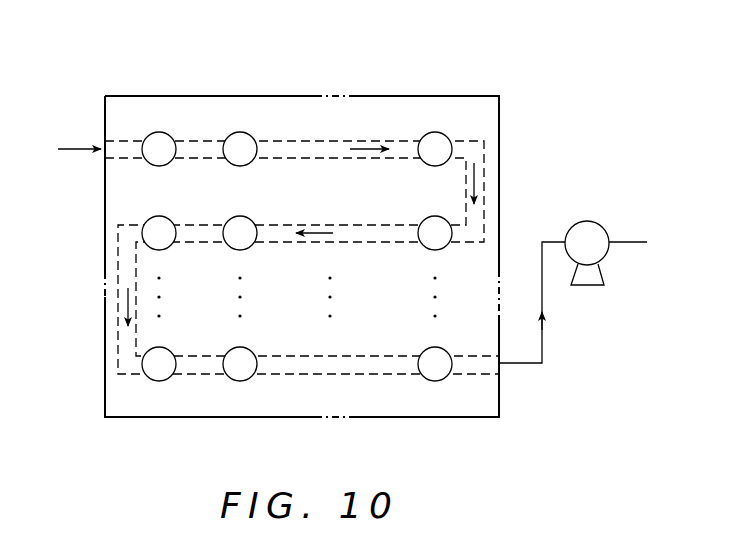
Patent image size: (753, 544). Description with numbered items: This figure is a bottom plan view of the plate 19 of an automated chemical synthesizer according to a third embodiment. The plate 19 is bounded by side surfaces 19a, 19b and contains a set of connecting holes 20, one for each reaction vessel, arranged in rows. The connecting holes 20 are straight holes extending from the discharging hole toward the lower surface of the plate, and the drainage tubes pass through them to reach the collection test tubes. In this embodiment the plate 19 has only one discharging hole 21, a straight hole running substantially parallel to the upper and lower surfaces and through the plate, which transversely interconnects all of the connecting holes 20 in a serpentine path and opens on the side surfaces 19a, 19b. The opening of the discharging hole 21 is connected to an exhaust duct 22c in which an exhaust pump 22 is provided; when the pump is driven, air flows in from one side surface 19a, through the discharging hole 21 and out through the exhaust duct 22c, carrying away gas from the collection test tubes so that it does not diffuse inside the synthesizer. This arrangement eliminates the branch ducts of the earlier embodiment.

The plate 19 is at (457, 95).
The side surface 19a is at (105, 382).
The side surface 19b is at (499, 398).
The connecting holes 20 is at (163, 160).
The discharging hole 21 is at (278, 142).
The pump 22 is at (591, 232).
The exhaust duct 22c is at (550, 240).